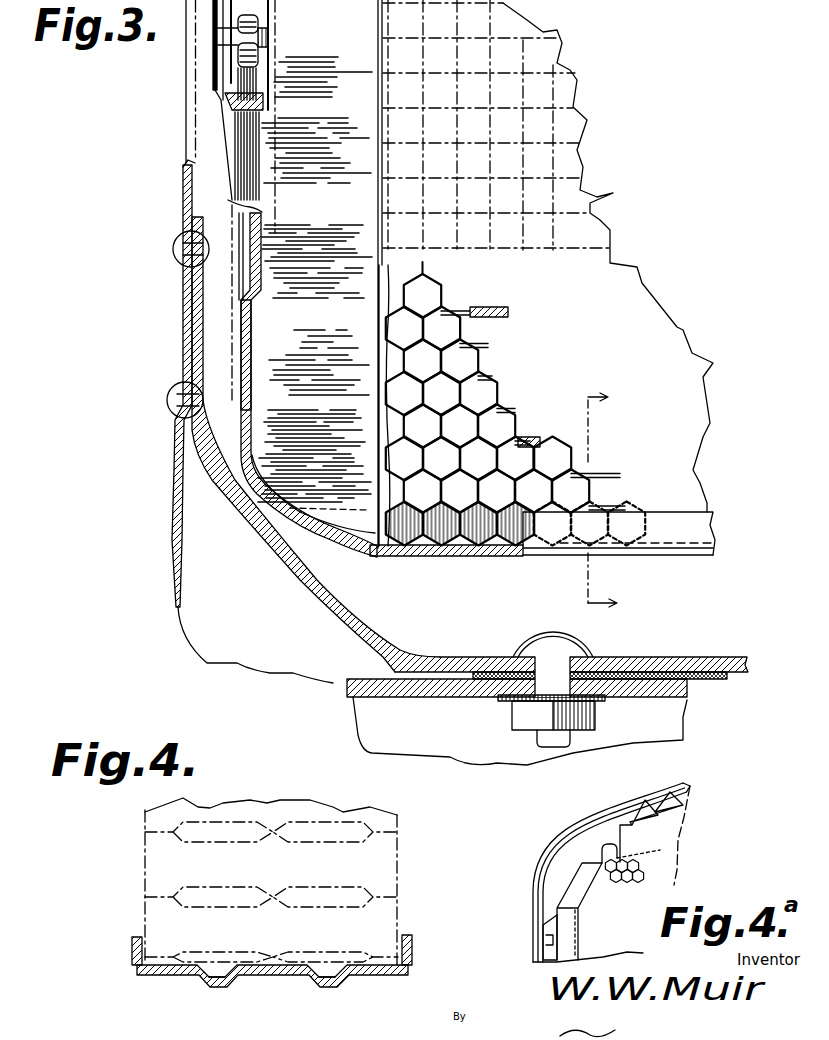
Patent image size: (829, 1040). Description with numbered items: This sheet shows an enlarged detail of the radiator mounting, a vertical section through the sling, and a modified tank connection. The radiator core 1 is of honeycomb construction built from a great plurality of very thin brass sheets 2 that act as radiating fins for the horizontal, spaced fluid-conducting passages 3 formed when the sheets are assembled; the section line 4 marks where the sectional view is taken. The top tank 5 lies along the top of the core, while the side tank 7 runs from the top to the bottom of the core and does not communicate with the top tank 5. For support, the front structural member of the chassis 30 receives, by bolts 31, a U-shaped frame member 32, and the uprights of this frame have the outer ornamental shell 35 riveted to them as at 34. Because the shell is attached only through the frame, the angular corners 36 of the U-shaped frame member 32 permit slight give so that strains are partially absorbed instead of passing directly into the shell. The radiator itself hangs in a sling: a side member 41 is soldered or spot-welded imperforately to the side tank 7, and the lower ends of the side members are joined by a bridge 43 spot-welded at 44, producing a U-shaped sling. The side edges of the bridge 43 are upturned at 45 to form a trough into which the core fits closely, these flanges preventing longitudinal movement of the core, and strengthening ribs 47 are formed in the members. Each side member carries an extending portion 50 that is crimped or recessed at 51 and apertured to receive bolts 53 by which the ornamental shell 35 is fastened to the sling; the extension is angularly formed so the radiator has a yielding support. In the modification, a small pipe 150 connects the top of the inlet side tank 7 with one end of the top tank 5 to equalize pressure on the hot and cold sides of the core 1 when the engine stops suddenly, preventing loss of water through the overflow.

In FIG. 3, the radiator core 1 is at (596, 200).
In FIG. 4, the radiator core 1 is at (157, 866).
In FIG. 4A, the radiator core 1 is at (617, 880).
In FIG. 3, the brass sheets 2 is at (461, 330).
In FIG. 3, the fluid-conducting passages 3 is at (496, 307).
In FIG. 4, the fluid-conducting passages 3 is at (322, 842).
In FIG. 3, the section line 4- 4 is at (614, 501).
In FIG. 4A, the top tank 5 is at (623, 833).
In FIG. 3, the side tank 7 is at (356, 325).
In FIG. 4A, the side tank 7 is at (570, 903).
In FIG. 3, the front structural member of the chassis 30 is at (585, 755).
In FIG. 3, the bolts 31 is at (537, 740).
In FIG. 3, the U-shaped frame member 32 is at (674, 656).
In FIG. 3, the rivets 34 is at (175, 250).
In FIG. 3, the outer ornamental shell 35 is at (185, 130).
In FIG. 4A, the outer ornamental shell 35 is at (540, 917).
In FIG. 3, the angular corners 36 is at (290, 560).
In FIG. 3, the side member 41 is at (250, 272).
In FIG. 3, the bridge 43 is at (413, 555).
In FIG. 4, the bridge 43 is at (262, 977).
In FIG. 3, the spot welds 44 is at (252, 388).
In FIG. 3, the upturned edges 45 is at (527, 523).
In FIG. 4, the upturned edges 45 is at (132, 952).
In FIG. 4, the strengthening ribs 47 is at (225, 984).
In FIG. 3, the extending portions 50 is at (232, 200).
In FIG. 3, the recess 51 is at (213, 87).
In FIG. 3, the bolts 53 is at (272, 42).
In FIG. 4A, the pipe 150 is at (598, 862).